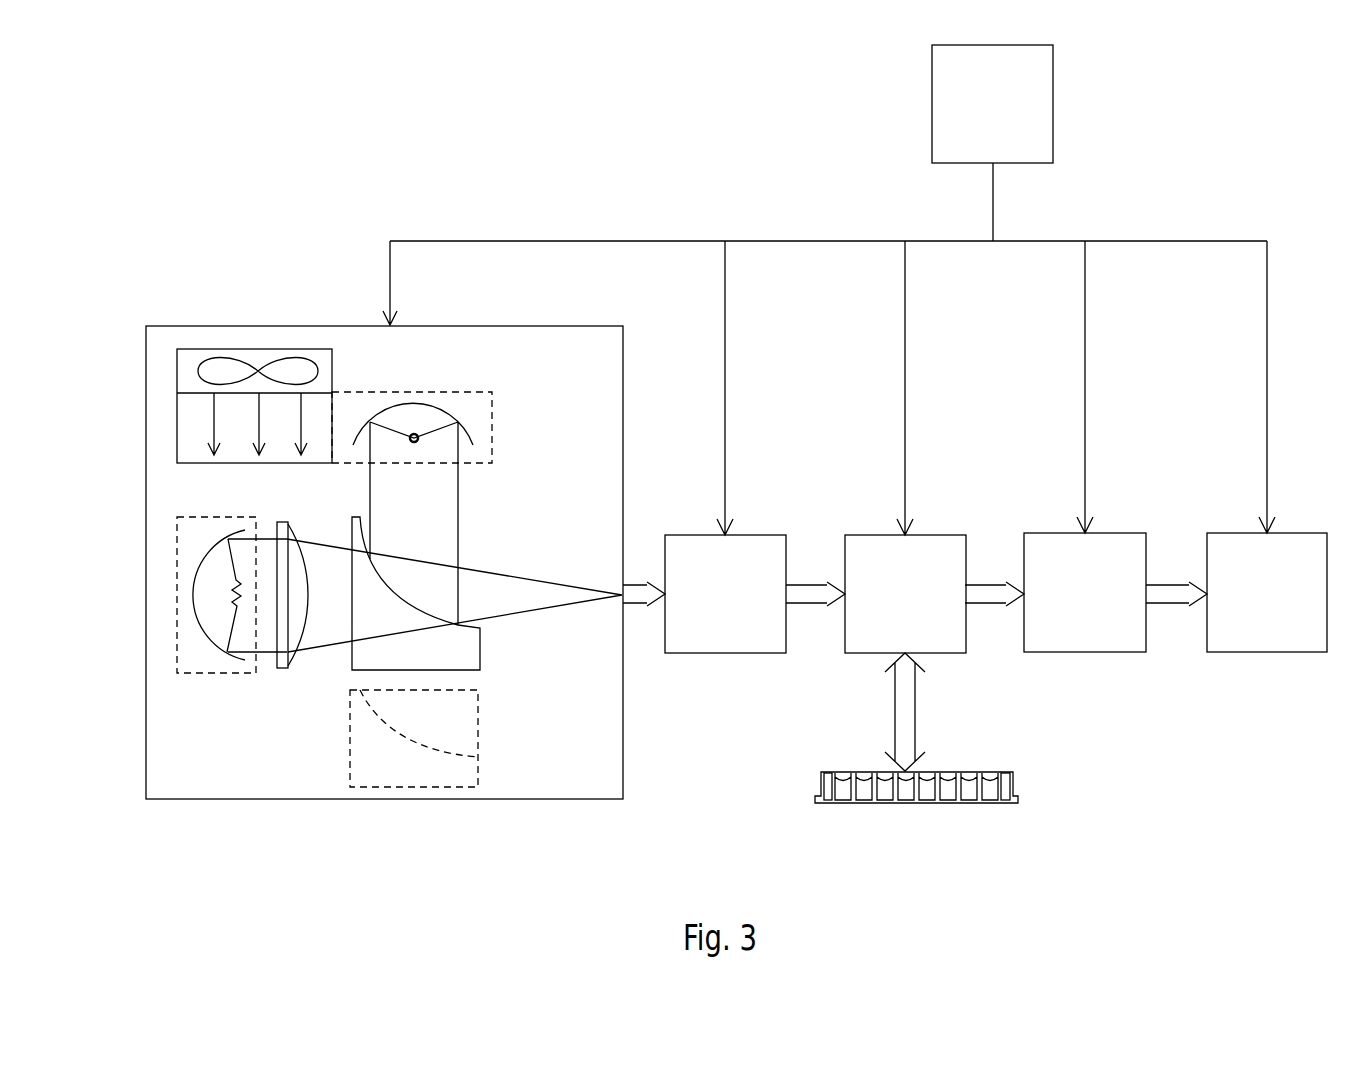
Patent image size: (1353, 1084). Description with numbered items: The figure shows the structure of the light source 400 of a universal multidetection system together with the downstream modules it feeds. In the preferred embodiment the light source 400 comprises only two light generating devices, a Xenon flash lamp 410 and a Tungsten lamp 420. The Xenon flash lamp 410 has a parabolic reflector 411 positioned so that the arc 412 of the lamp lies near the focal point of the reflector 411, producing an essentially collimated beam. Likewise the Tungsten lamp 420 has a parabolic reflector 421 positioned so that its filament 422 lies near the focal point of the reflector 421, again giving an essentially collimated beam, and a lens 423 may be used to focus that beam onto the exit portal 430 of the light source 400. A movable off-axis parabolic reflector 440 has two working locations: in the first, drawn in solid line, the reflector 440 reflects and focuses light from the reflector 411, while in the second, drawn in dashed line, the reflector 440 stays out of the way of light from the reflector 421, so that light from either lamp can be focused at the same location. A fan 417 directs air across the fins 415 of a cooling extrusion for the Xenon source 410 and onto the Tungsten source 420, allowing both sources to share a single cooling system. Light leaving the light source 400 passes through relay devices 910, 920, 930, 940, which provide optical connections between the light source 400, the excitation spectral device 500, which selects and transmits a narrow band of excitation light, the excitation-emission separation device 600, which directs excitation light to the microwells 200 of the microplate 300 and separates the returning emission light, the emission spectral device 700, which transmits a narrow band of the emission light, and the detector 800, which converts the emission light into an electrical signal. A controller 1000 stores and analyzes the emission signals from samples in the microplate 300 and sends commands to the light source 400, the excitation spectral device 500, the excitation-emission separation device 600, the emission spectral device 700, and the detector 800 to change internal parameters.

The controller 1000 is at (829, 290).
The excitation spectral device 500 is at (725, 594).
The excitation-emission separation device 600 is at (905, 594).
The emission spectral device 700 is at (1085, 592).
The detector 800 is at (1267, 592).
The light source 400 is at (495, 799).
The Xenon flash lamp 410 is at (492, 402).
The parabolic reflector 411 is at (473, 437).
The arc 412 is at (414, 438).
The fins 415 is at (177, 427).
The fan 417 is at (213, 358).
The Tungsten lamp 420 is at (235, 675).
The parabolic reflector 421 is at (207, 640).
The filament 422 is at (235, 590).
The lens 423 is at (288, 667).
The exit portal 430 is at (620, 598).
The movable off-axis parabolic reflector 440 is at (480, 670).
The relay device 910 is at (637, 603).
The relay device 920 is at (815, 614).
The relay device 930 is at (994, 614).
The relay device 940 is at (1176, 614).
The microwells 200 is at (987, 779).
The microplate 300 is at (1012, 806).